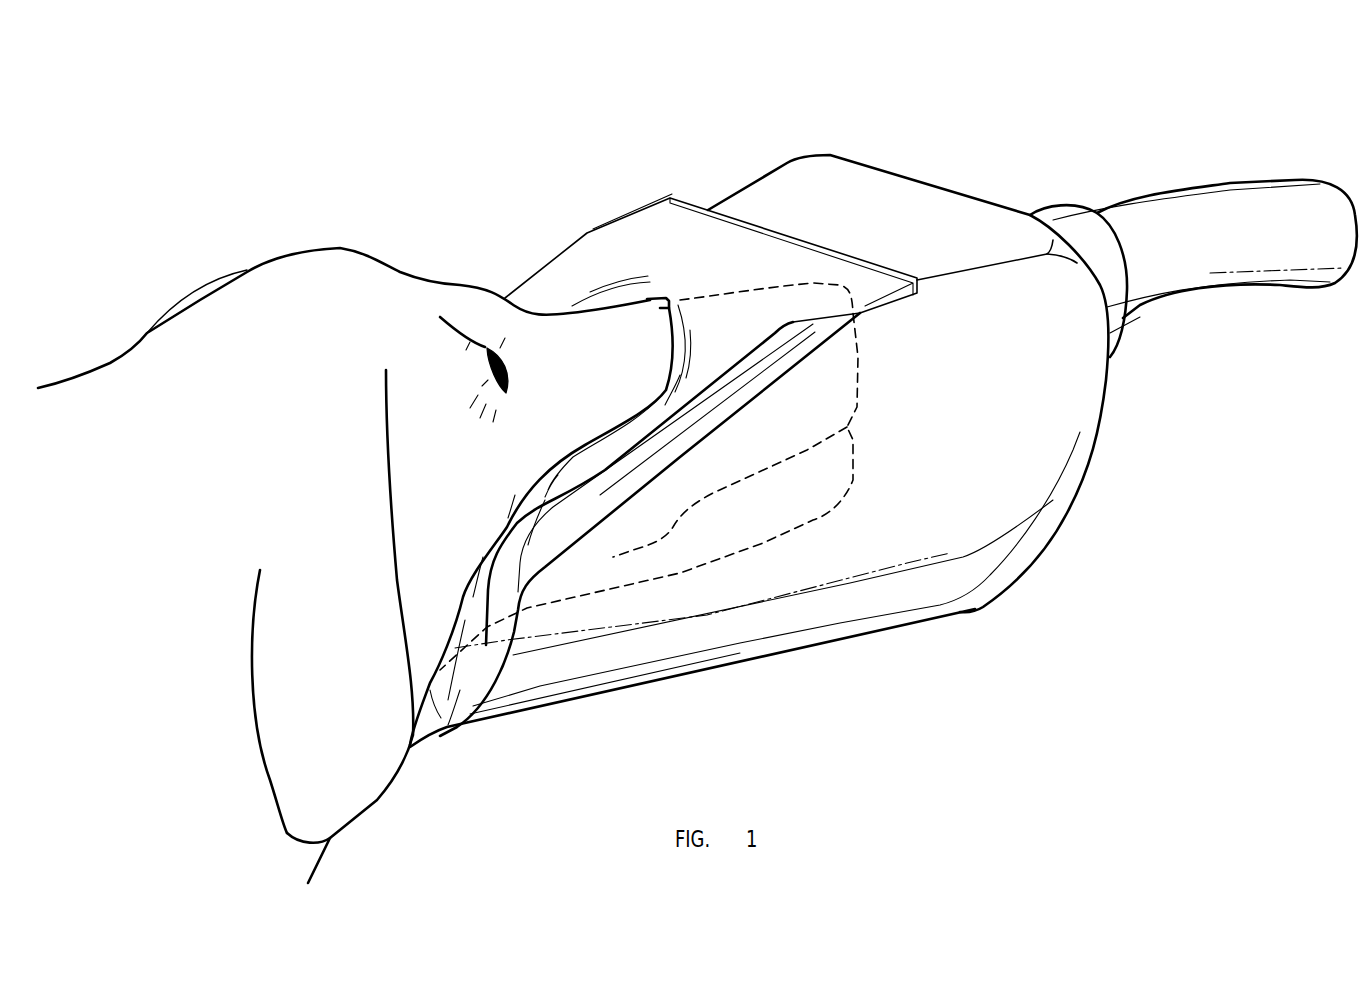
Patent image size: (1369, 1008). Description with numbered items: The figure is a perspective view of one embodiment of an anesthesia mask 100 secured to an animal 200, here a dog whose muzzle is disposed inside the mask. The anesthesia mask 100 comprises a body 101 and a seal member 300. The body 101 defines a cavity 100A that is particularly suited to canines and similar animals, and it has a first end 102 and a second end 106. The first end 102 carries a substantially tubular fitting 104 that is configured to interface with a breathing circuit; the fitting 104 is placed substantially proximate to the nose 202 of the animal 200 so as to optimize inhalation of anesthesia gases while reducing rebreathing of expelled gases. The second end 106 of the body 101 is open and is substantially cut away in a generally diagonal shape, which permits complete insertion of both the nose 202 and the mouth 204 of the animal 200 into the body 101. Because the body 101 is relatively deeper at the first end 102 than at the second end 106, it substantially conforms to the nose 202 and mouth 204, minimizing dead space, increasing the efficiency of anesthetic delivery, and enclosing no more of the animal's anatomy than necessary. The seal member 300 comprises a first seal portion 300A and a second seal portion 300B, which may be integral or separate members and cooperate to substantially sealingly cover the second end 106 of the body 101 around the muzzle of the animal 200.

The anesthesia mask 100 is at (1070, 553).
The cavity 100A is at (740, 625).
The body 101 is at (940, 607).
The first end 102 is at (975, 160).
The fitting 104 is at (1070, 222).
The second end 106 is at (517, 745).
The animal 200 is at (478, 244).
The nose 202 is at (853, 290).
The mouth 204 is at (640, 550).
The seal member 300 is at (683, 210).
The first seal portion 300A is at (705, 367).
The second seal portion 300B is at (658, 297).